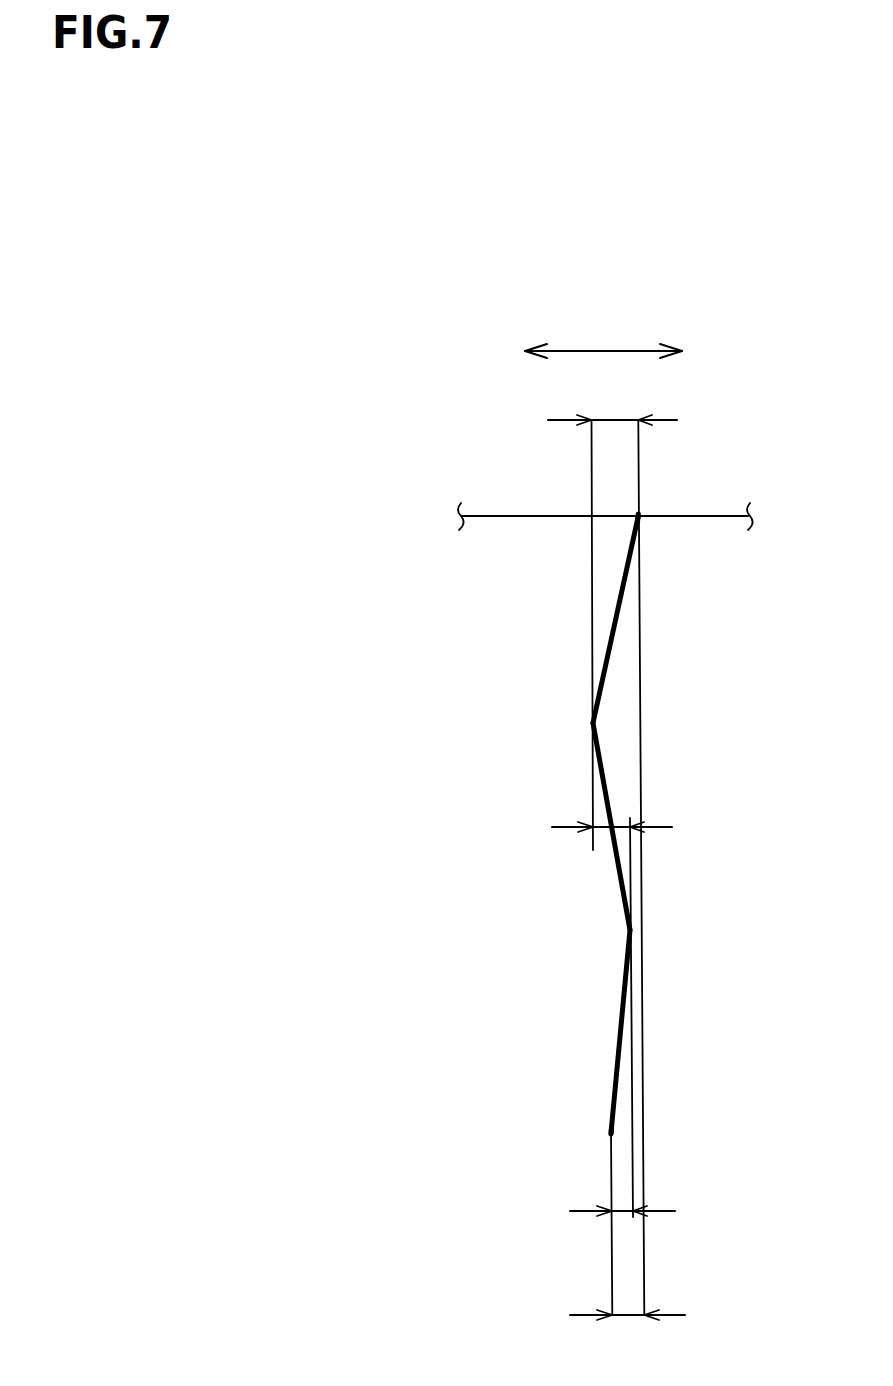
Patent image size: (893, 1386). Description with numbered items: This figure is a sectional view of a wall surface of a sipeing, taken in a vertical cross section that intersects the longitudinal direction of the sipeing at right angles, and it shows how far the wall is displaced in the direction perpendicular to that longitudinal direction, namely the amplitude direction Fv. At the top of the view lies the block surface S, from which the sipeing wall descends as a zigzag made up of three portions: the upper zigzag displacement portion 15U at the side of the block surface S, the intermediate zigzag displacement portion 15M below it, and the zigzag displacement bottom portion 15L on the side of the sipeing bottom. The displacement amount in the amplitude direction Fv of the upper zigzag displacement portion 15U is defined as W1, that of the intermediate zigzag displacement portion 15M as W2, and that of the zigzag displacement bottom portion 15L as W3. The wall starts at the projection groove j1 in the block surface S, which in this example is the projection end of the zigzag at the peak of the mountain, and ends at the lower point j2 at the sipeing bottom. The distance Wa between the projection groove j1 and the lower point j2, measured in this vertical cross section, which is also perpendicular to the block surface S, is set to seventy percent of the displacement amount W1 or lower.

The amplitude direction Fv is at (602, 351).
The block surface S is at (723, 516).
The displacement amount of the upper zigzag displacement portion W1 is at (612, 849).
The projection groove j1 is at (643, 510).
The upper zigzag displacement portion 15U is at (617, 607).
The intermediate zigzag displacement portion 15M is at (617, 860).
The zigzag displacement bottom portion 15L is at (618, 1042).
The lower point j2 is at (606, 1133).
The displacement amount of the intermediate zigzag displacement portion W2 is at (625, 820).
The displacement amount of the zigzag displacement bottom portion W3 is at (623, 1213).
The distance between projection groove and lower point Wa is at (627, 1335).